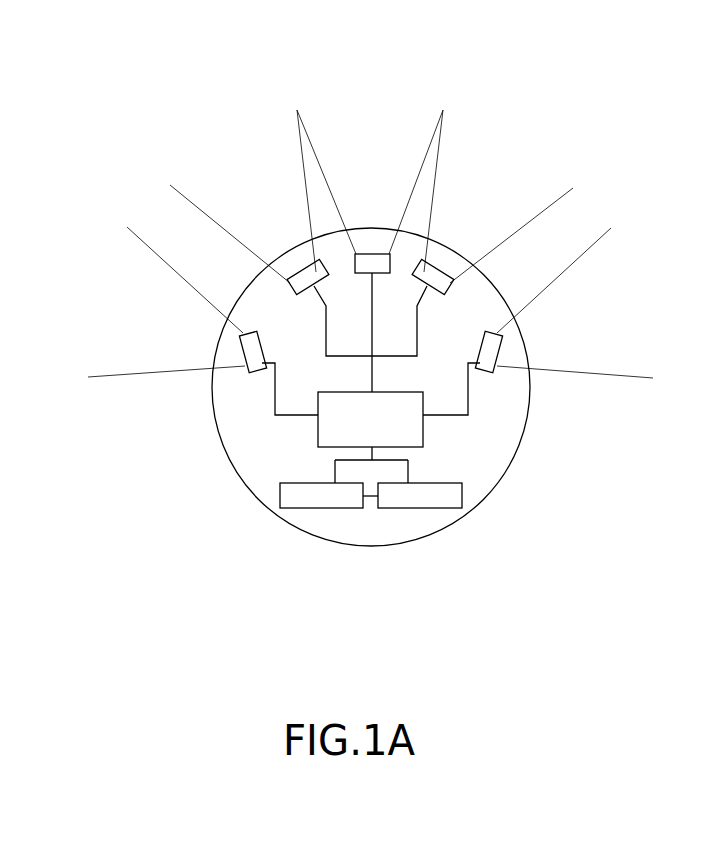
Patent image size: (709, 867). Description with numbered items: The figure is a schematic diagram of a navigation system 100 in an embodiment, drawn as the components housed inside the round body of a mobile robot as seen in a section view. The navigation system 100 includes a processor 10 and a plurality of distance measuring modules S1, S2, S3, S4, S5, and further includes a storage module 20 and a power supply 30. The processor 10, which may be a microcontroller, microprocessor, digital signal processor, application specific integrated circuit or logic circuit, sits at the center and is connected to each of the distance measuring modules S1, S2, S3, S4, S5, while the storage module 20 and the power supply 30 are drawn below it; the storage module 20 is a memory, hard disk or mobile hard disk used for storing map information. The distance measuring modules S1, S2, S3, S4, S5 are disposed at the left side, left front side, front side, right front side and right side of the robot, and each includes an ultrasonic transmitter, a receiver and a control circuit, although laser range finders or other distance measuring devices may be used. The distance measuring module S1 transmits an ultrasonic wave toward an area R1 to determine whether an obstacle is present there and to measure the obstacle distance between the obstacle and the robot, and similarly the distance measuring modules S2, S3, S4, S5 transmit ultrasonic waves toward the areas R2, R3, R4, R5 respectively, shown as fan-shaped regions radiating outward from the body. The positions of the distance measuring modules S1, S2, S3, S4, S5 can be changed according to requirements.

The navigation system 100 is at (423, 543).
The processor 10 is at (330, 432).
The storage module 20 is at (279, 499).
The power supply 30 is at (464, 488).
The distance measuring module S1 is at (249, 369).
The distance measuring module S2 is at (290, 287).
The distance measuring module S3 is at (375, 256).
The distance measuring module S4 is at (452, 287).
The distance measuring module S5 is at (496, 369).
The area R1 is at (166, 302).
The area R2 is at (243, 196).
The area R3 is at (370, 182).
The area R4 is at (498, 196).
The area R5 is at (575, 303).